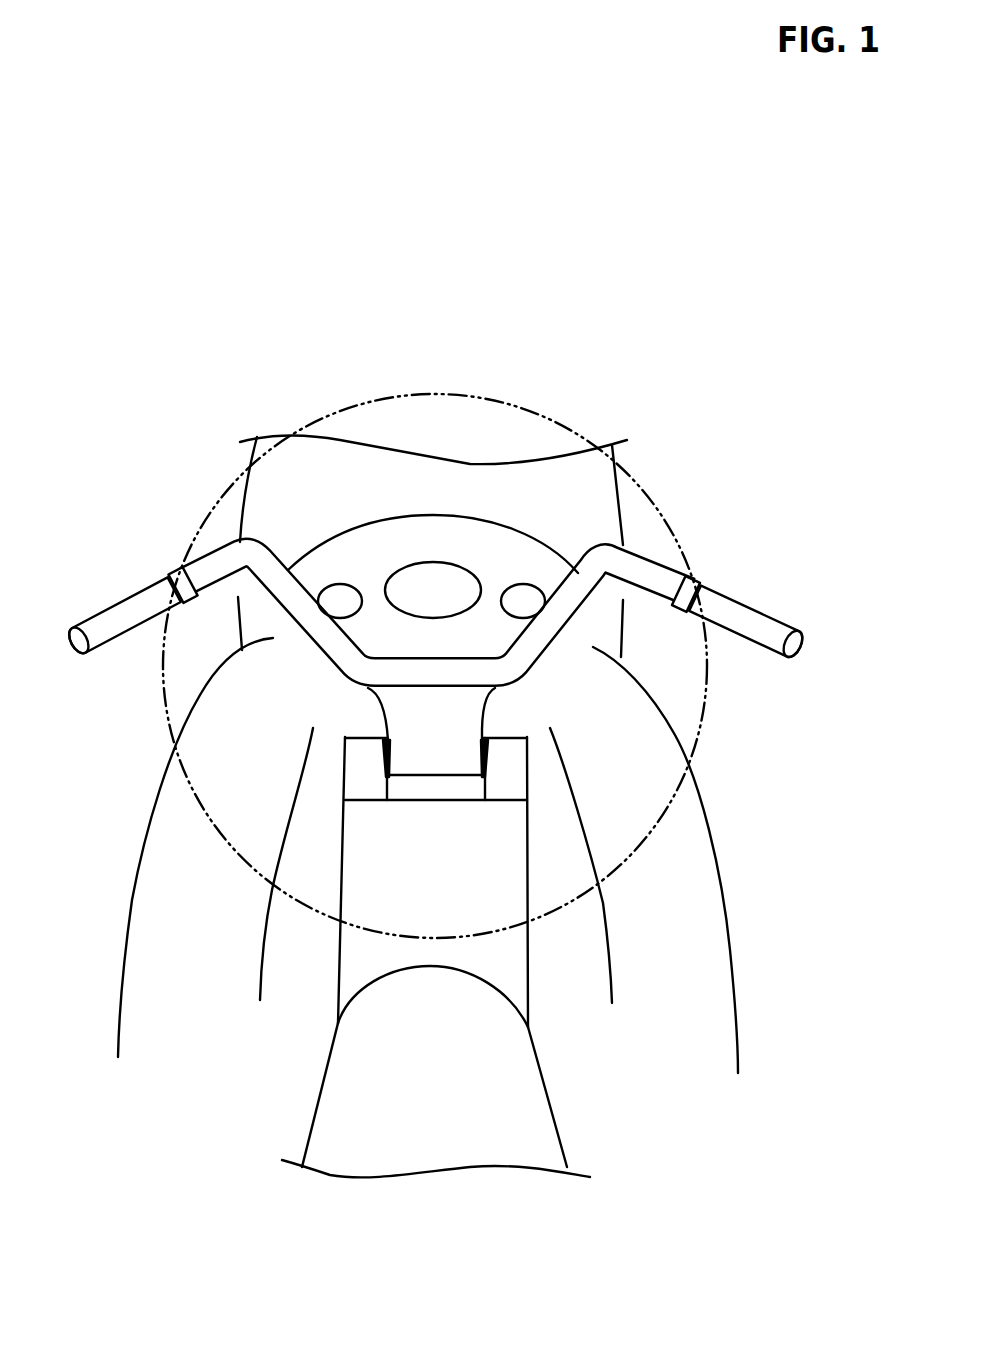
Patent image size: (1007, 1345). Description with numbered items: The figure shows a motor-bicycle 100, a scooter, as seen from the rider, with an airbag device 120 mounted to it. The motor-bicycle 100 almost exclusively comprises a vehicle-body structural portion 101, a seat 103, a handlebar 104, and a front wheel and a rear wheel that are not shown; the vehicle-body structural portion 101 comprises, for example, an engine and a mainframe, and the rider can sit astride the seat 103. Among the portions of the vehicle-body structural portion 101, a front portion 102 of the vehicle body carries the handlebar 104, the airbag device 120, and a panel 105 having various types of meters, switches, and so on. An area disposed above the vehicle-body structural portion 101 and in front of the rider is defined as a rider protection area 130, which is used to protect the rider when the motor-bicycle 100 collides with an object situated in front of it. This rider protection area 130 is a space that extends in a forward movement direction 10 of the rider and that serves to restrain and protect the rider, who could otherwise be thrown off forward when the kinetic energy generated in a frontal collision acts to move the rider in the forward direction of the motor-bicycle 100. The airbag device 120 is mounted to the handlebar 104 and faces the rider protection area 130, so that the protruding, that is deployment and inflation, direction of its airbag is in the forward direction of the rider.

The forward movement direction 10 is at (433, 738).
The motor-bicycle 100 is at (441, 736).
The vehicle-body structural portion 101 is at (643, 1017).
The front portion 102 is at (625, 738).
The seat 103 is at (550, 1140).
The handlebar 104 is at (177, 575).
The panel 105 is at (340, 555).
The airbag device 120 is at (362, 716).
The rider protection area 130 is at (318, 418).